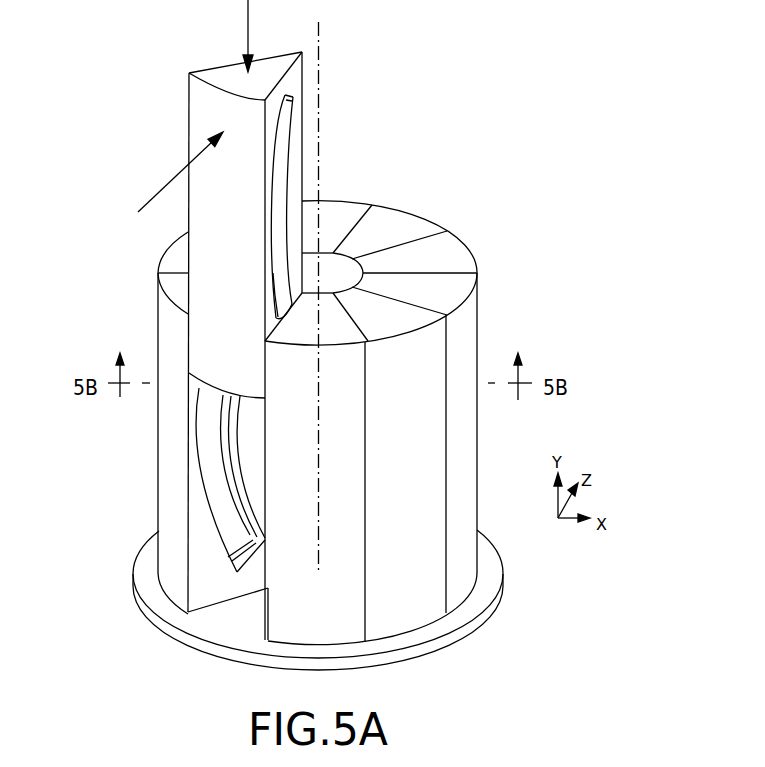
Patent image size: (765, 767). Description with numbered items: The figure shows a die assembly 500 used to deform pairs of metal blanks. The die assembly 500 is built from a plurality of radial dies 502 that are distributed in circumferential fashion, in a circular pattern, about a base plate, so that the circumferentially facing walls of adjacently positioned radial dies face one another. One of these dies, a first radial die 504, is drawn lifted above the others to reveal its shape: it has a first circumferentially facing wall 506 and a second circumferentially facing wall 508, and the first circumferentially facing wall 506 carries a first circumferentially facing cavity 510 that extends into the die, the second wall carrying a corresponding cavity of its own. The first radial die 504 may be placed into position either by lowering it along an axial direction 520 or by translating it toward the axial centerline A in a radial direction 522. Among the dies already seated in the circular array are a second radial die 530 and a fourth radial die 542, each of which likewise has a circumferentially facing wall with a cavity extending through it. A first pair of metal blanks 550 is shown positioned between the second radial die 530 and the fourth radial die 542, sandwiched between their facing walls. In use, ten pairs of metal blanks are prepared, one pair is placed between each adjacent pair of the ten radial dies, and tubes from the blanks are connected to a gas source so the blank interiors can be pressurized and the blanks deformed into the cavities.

The die assembly 500 is at (316, 344).
The plurality of radial dies 502 is at (500, 282).
The first radial die 504 is at (278, 58).
The first circumferentially facing wall 506 is at (288, 190).
The second circumferentially facing wall 508 is at (246, 323).
The first circumferentially facing cavity 510 is at (277, 135).
The axial direction 520 is at (250, 17).
The radial direction 522 is at (158, 187).
The second radial die 530 is at (285, 607).
The fourth radial die 542 is at (415, 535).
The first pair of metal blanks 550 is at (365, 583).
The axial centerline A is at (320, 490).